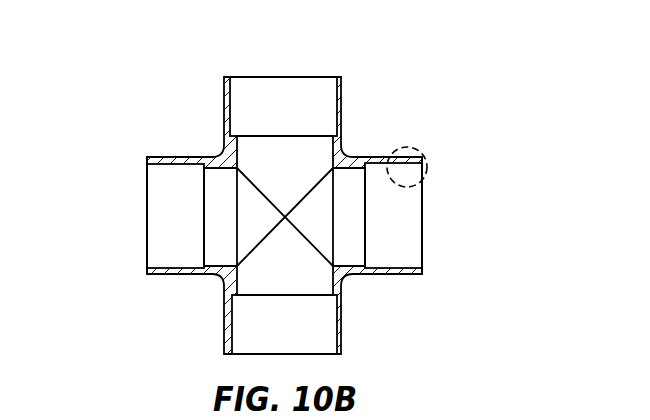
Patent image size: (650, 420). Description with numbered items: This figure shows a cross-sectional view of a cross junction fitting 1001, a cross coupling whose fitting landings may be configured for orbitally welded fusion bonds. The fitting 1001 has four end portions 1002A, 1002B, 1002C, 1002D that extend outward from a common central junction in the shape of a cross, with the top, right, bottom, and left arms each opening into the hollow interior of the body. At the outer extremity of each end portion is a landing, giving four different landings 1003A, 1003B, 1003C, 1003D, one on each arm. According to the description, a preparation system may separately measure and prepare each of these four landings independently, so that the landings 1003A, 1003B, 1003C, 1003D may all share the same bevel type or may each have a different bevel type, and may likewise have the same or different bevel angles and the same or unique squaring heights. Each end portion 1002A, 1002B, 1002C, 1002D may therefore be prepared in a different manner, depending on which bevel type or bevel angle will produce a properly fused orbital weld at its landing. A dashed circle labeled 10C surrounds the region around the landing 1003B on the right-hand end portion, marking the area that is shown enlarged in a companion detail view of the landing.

The cross junction fitting 1001 is at (323, 273).
The end portion 1002A is at (263, 83).
The end portion 1002B is at (411, 232).
The end portion 1002C is at (323, 311).
The end portion 1002D is at (165, 218).
The landing 1003A is at (344, 79).
The landing 1003B is at (420, 150).
The landing 1003C is at (343, 348).
The landing 1003D is at (147, 158).
The detail region shown in FIG. 10C is at (434, 160).